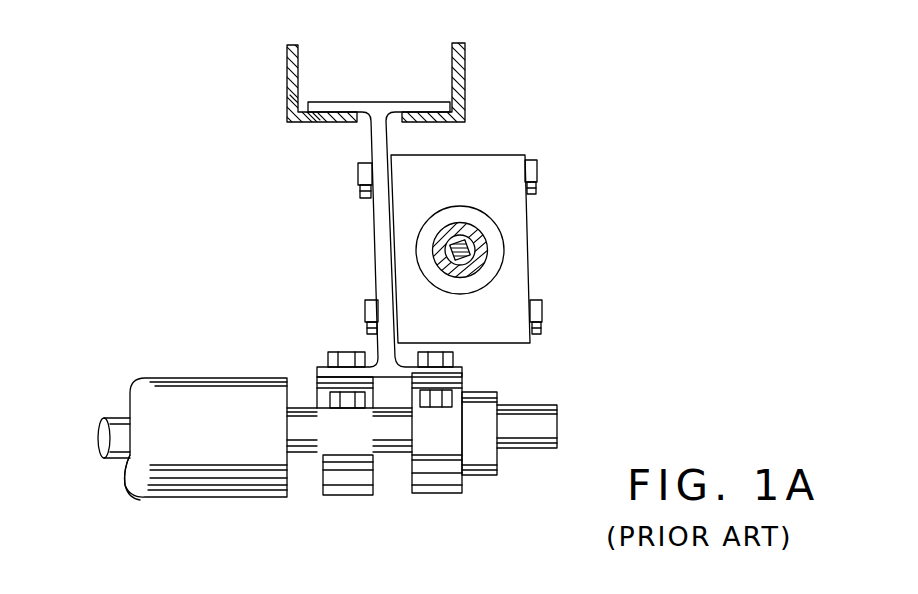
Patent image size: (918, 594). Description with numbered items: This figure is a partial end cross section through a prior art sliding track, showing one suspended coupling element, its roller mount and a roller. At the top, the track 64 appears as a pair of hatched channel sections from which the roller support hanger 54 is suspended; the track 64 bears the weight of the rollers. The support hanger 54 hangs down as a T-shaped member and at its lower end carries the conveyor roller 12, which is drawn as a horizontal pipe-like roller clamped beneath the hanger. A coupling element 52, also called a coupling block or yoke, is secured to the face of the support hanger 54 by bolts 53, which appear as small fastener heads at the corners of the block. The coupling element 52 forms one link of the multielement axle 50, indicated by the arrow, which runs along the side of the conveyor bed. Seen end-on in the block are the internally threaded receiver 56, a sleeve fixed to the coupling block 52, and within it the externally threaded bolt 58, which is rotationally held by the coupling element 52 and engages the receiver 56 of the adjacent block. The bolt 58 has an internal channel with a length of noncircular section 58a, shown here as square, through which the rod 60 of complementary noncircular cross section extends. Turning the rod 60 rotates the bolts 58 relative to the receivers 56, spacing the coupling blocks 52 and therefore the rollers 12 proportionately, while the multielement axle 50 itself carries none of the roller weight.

The conveyor roller 12 is at (233, 378).
The multielement axle 50 is at (530, 136).
The coupling element 52 is at (528, 282).
The bolts 53 is at (358, 181).
The support hanger 54 is at (403, 101).
The internally threaded receiver 56 is at (500, 220).
The externally threaded bolt 58 is at (463, 264).
The length of noncircular section 58a is at (470, 253).
The rod 60 is at (470, 246).
The track 64 is at (287, 66).